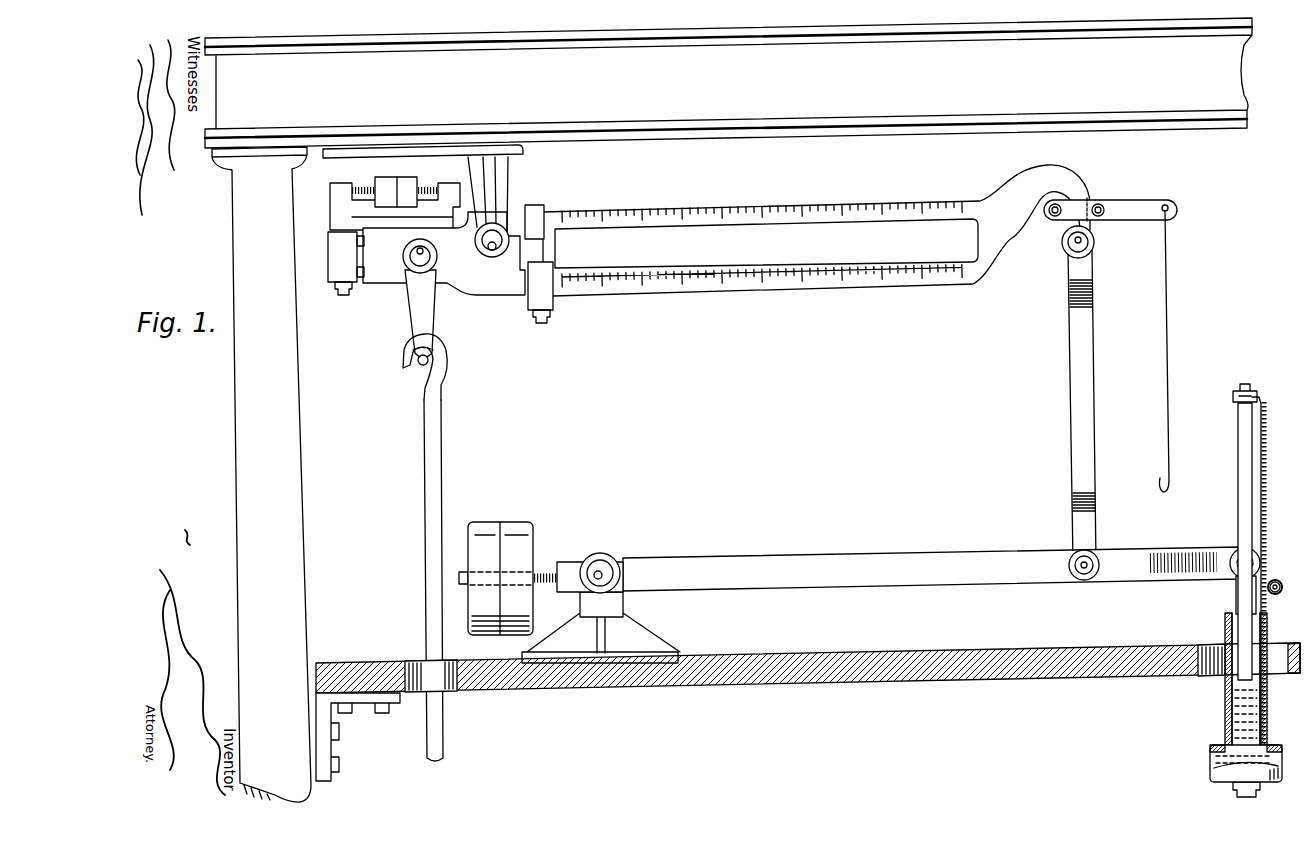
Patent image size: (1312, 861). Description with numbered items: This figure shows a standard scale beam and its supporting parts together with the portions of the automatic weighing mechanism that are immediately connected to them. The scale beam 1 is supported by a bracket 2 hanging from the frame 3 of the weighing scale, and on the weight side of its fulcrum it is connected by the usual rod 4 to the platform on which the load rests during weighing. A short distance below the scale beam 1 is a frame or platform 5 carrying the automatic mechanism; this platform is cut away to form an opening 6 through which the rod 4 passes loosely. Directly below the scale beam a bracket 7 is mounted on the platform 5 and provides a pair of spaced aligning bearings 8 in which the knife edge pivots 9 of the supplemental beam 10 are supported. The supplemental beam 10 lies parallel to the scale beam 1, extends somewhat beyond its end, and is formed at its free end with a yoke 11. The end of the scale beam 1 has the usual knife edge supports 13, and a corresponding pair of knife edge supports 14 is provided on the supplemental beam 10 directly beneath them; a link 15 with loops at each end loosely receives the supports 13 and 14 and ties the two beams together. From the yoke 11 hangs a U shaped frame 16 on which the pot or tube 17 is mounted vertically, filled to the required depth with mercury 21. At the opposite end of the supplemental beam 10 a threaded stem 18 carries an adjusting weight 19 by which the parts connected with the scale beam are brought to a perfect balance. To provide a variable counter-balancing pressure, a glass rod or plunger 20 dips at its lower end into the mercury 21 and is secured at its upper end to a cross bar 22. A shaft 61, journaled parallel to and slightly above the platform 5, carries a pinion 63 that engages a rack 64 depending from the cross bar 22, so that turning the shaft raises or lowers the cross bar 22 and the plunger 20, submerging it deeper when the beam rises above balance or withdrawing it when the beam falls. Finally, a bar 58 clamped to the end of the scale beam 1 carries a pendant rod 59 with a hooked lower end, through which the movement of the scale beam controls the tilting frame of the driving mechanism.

The scale beam 1 is at (779, 290).
The bracket 2 is at (512, 181).
The frame 3 is at (728, 83).
The rod 4 is at (434, 447).
The platform 5 is at (805, 692).
The opening 6 is at (414, 659).
The bracket 7 is at (650, 642).
The aligning bearings 8 is at (605, 555).
The knife edge pivots 9 is at (597, 572).
The supplemental beam 10 is at (931, 556).
The yoke 11 is at (1213, 555).
The knife edge supports 13 is at (1083, 244).
The knife edge supports 14 is at (1090, 560).
The link 15 is at (1097, 362).
The U shaped frame 16 is at (1278, 788).
The pot or tube 17 is at (1225, 708).
The threaded stem 18 is at (543, 565).
The adjusting weight 19 is at (500, 522).
The glass rod or plunger 20 is at (1238, 432).
The mercury 21 is at (1240, 735).
The cross bar 22 is at (1258, 393).
The bar 58 is at (1141, 198).
The pendant rod 59 is at (1170, 315).
The shaft 61 is at (1279, 596).
The pinion 63 is at (1277, 578).
The rack 64 is at (1267, 452).